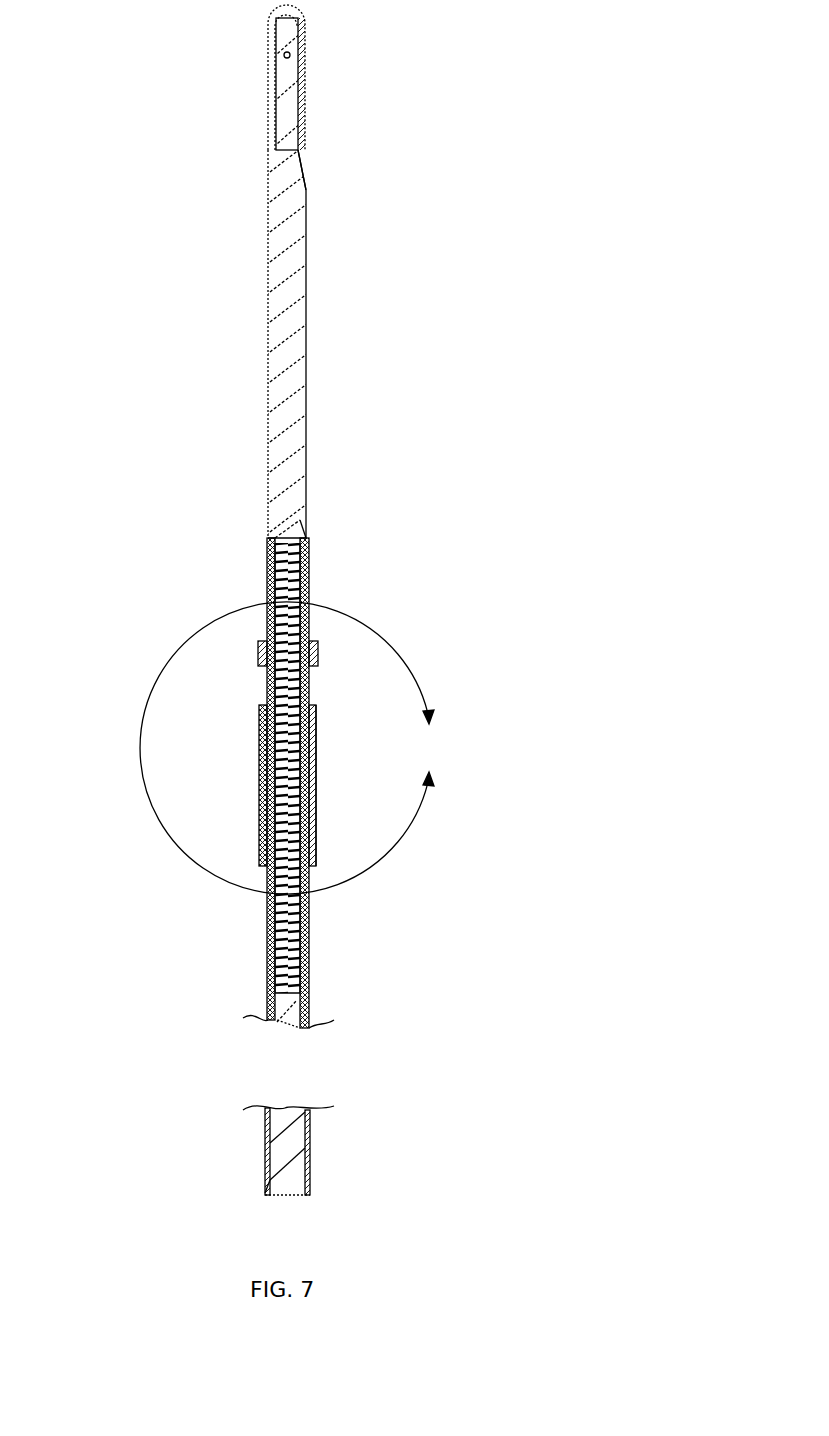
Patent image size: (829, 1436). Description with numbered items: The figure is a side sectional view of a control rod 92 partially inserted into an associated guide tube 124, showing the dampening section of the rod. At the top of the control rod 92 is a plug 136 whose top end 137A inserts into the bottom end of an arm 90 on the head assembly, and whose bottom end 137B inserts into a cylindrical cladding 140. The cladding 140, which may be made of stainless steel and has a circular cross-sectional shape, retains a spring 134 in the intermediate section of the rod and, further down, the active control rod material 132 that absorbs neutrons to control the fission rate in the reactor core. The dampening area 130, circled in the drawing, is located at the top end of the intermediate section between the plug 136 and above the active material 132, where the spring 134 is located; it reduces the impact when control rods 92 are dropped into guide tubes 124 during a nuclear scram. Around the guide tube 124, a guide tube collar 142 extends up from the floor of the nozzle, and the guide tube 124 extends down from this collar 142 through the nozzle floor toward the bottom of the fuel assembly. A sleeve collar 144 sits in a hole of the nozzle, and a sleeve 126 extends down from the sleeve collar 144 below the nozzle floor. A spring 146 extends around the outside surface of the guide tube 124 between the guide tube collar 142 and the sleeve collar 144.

The arm 90 is at (270, 75).
The control rod 92 is at (416, 445).
The plug 136 is at (297, 282).
The top end 137A is at (290, 200).
The bottom end 137B is at (296, 523).
The cladding 140 is at (270, 537).
The dampening area 130 is at (137, 780).
The guide tube collar 142 is at (263, 655).
The spring 146 is at (312, 677).
The guide tube 124 is at (266, 700).
The sleeve collar 144 is at (315, 724).
The sleeve 126 is at (316, 820).
The spring 134 is at (305, 950).
The active control rod material 132 is at (300, 1007).